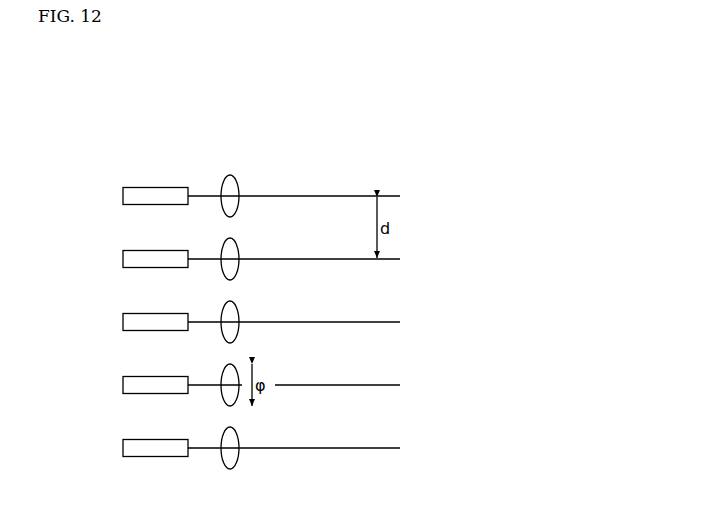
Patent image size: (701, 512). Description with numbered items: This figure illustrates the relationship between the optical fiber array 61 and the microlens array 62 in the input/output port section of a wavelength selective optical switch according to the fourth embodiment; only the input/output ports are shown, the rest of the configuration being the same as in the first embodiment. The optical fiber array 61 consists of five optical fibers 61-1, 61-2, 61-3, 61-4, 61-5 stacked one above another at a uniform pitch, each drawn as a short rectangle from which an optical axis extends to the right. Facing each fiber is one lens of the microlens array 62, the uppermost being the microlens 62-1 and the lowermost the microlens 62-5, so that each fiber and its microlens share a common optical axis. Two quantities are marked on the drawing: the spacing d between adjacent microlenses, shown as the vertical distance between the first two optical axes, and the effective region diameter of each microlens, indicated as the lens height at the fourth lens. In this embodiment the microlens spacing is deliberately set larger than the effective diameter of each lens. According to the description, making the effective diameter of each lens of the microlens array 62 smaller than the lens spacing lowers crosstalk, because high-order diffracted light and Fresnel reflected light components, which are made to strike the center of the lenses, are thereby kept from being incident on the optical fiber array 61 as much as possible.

The optical fiber array 61 is at (169, 170).
The optical fiber 61-1 is at (137, 187).
The optical fiber 61-2 is at (137, 250).
The optical fiber 61-3 is at (137, 313).
The optical fiber 61-4 is at (137, 376).
The optical fiber 61-5 is at (137, 439).
The microlens array 62 is at (232, 149).
The microlens 62-1 is at (238, 190).
The microlens 62-5 is at (238, 454).